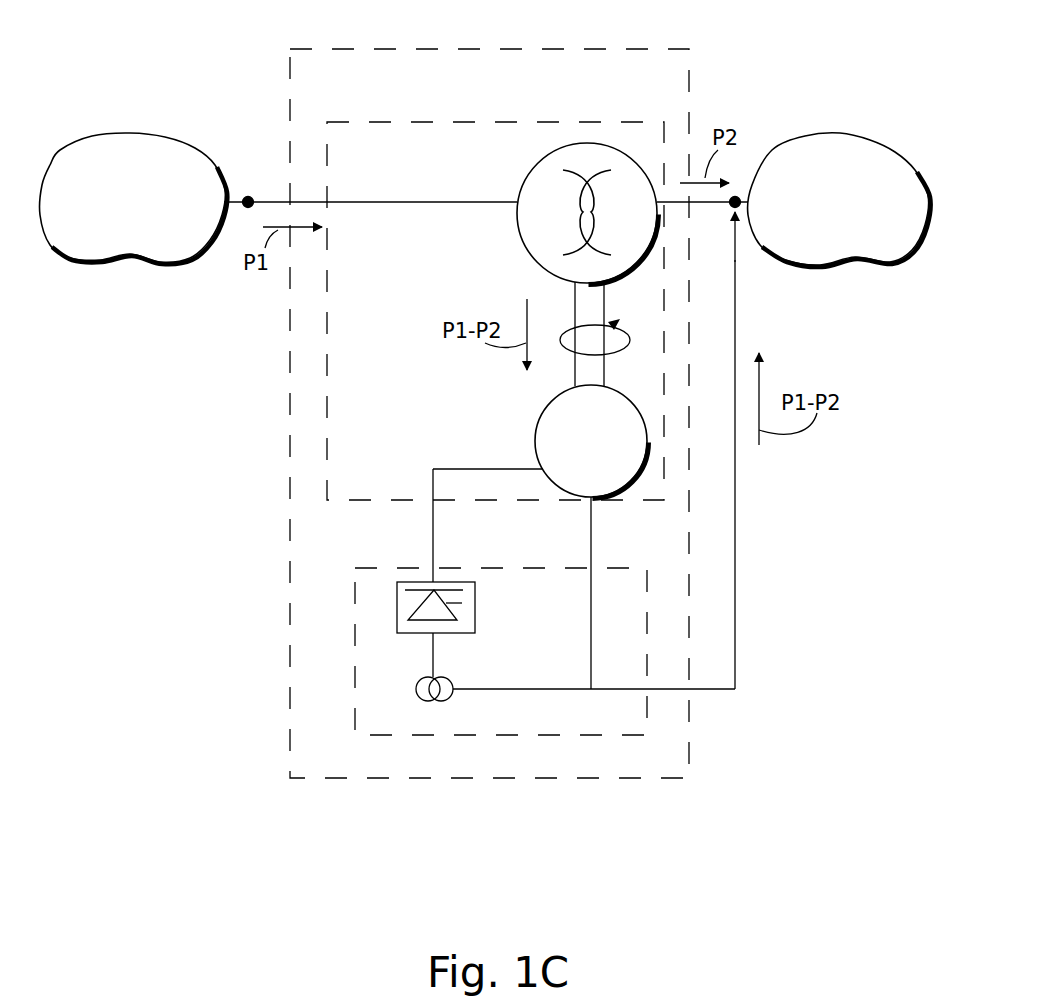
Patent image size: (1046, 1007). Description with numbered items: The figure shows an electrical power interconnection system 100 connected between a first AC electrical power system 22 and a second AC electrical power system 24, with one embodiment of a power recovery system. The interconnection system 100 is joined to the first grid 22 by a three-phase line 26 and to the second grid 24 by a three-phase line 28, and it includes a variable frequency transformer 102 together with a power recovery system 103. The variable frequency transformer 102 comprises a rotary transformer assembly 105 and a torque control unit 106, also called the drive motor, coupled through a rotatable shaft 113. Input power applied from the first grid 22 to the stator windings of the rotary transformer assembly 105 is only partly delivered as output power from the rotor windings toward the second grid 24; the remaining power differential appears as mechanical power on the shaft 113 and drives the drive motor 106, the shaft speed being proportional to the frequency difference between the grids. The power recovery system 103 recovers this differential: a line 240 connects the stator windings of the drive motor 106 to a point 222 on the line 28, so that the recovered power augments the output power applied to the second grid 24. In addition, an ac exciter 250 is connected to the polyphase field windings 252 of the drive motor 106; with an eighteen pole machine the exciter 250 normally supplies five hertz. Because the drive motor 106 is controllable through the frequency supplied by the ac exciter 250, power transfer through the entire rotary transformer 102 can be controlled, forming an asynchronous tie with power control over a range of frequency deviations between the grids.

The first AC electrical power system 22 is at (152, 143).
The second AC electrical power system 24 is at (792, 138).
The 3-phase line 26 is at (248, 197).
The 3-phase line 28 is at (700, 204).
The electrical power interconnection system 100 is at (693, 65).
The variable frequency transformer 102 is at (512, 122).
The power recovery system 103 is at (355, 635).
The rotary transformer assembly 105 is at (623, 151).
The torque control unit 106 is at (537, 458).
The rotatable shaft 113 is at (604, 314).
The point 222 is at (737, 214).
The line 240 is at (737, 557).
The ac exciter 250 is at (477, 607).
The field windings 252 is at (433, 702).